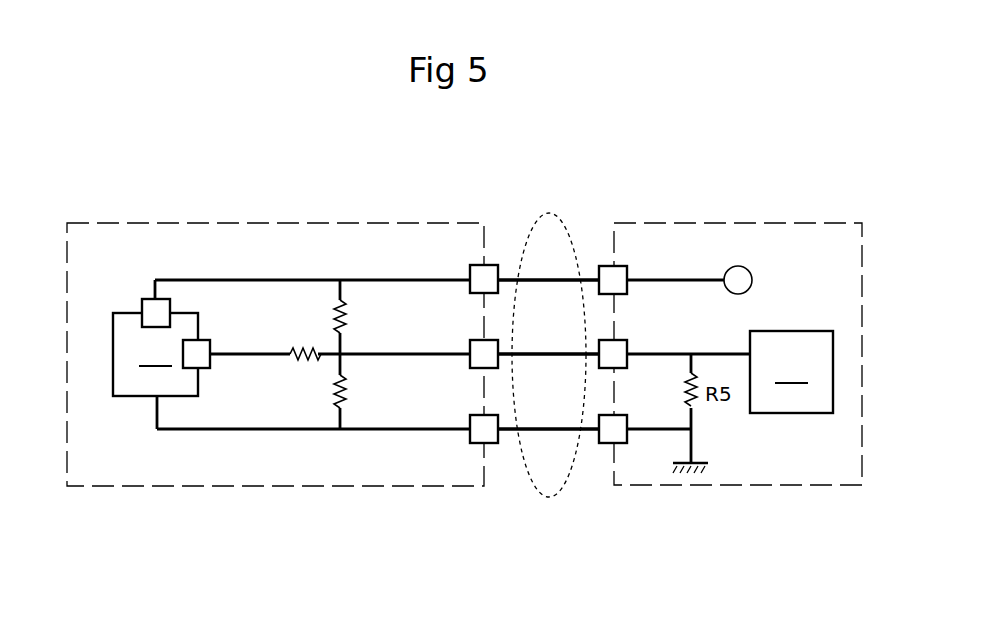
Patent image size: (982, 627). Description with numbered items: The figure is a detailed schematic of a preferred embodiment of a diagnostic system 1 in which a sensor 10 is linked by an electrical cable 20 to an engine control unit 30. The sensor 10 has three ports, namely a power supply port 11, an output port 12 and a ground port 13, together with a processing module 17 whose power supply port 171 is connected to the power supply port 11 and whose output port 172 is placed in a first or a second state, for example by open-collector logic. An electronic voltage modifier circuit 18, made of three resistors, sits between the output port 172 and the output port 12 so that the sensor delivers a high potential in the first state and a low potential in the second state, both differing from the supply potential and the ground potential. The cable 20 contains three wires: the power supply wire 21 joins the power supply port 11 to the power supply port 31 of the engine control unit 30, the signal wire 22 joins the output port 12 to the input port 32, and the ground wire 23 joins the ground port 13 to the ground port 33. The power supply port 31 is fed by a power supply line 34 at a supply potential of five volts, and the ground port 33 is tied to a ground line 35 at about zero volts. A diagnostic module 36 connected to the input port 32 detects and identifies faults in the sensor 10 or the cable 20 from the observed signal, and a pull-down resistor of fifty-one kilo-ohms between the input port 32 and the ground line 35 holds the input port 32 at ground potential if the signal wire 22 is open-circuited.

The diagnostic system 1 is at (118, 183).
The sensor 10 is at (238, 223).
The power supply port 11 is at (478, 265).
The output port 12 is at (475, 340).
The ground port 13 is at (476, 443).
The processing module 17 is at (155, 354).
The power supply port 171 is at (170, 300).
The output port 172 is at (210, 368).
The electronic voltage modifier circuit 18 is at (323, 373).
The electrical cable 20 is at (532, 478).
The power supply wire 21 is at (548, 352).
The signal wire 22 is at (523, 278).
The ground wire 23 is at (552, 431).
The engine control unit 30 is at (795, 223).
The power supply port 31 is at (618, 266).
The input port 32 is at (626, 366).
The ground port 33 is at (615, 443).
The power supply line 34 is at (675, 279).
The ground line 35 is at (690, 470).
The diagnostic module 36 is at (791, 372).